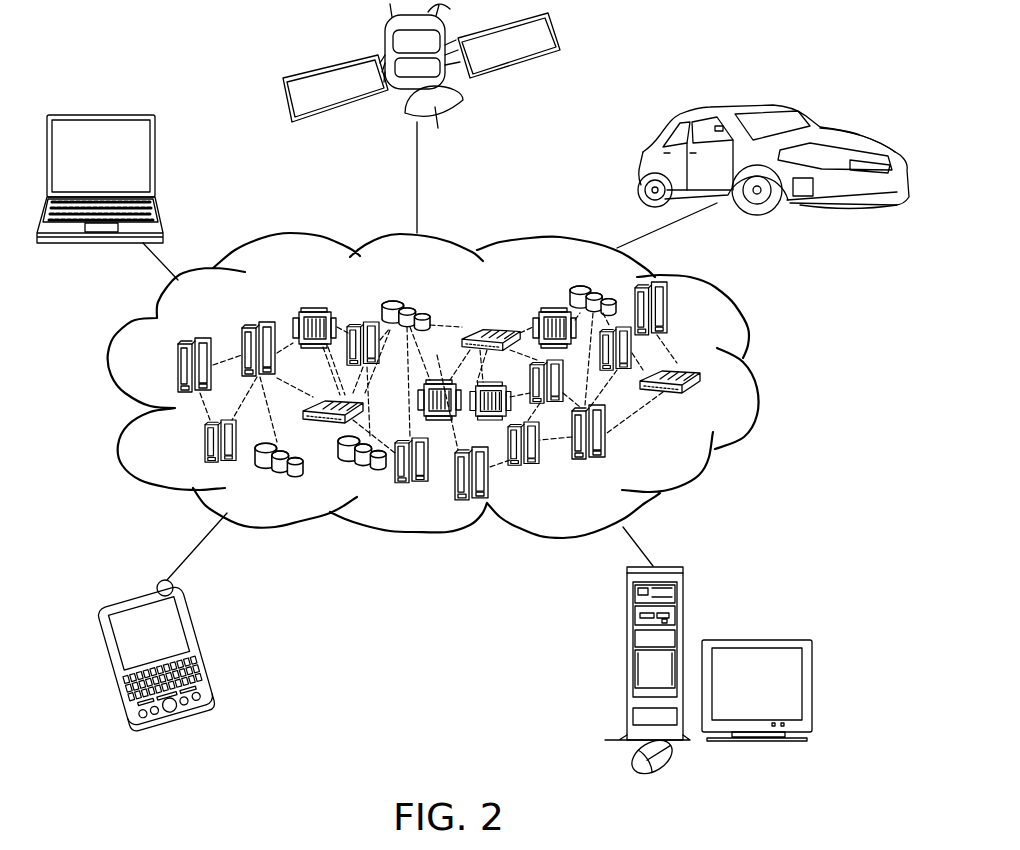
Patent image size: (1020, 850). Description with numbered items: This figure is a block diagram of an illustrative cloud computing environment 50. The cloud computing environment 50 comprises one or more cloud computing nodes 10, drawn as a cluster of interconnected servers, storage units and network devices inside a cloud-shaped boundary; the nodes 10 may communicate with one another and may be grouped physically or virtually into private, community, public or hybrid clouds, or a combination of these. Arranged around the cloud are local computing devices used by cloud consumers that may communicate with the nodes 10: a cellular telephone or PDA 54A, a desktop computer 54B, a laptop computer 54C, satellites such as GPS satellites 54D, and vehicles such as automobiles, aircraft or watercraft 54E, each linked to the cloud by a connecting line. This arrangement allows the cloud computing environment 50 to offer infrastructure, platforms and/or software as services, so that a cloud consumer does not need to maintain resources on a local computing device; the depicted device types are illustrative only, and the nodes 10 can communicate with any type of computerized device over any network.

The cloud computing nodes 10 is at (685, 452).
The cloud computing environment 50 is at (758, 377).
The cellular telephone or PDA 54A is at (197, 627).
The desktop computer 54B is at (626, 613).
The laptop computer 54C is at (155, 159).
The satellites 54D is at (313, 70).
The vehicles 54E is at (640, 158).